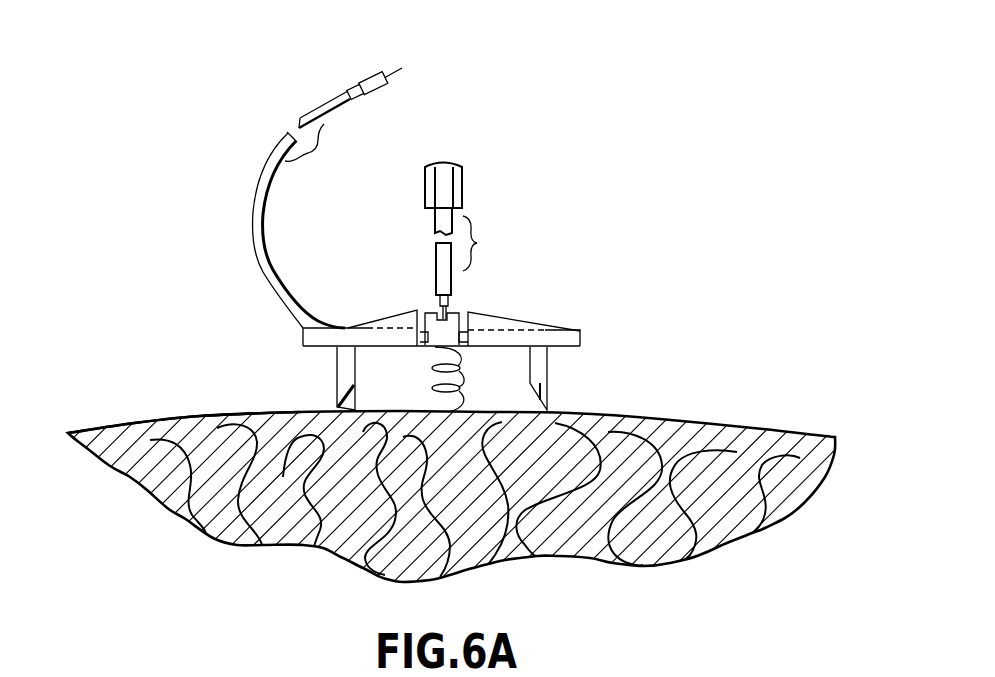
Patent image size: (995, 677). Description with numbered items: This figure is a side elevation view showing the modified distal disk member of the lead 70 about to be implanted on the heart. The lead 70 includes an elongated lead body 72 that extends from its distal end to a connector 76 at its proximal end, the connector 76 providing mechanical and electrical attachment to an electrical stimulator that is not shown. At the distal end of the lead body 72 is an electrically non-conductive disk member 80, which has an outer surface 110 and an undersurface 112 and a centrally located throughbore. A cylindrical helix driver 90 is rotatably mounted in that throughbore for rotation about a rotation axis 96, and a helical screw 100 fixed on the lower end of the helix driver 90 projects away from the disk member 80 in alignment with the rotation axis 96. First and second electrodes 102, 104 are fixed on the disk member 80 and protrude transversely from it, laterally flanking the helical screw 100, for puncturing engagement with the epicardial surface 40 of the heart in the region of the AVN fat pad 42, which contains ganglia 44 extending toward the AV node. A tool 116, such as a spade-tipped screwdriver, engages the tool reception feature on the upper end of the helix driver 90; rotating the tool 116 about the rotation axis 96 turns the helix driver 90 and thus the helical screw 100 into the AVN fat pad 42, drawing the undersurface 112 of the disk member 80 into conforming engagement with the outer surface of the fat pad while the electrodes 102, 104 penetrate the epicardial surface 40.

The epicardial surface 40 is at (766, 428).
The AVN fat pad 42 is at (192, 425).
The ganglia 44 is at (208, 537).
The lead 70 is at (333, 184).
The elongated lead body 72 is at (259, 252).
The connector 76 is at (396, 104).
The disk member 80 is at (456, 285).
The helix driver 90 is at (432, 312).
The rotation axis 96 is at (452, 310).
The helical screw 100 is at (432, 386).
The first electrode 102 is at (540, 387).
The second electrode 104 is at (342, 382).
The outer surface 110 is at (510, 326).
The undersurface 112 is at (573, 349).
The tool 116 is at (428, 184).